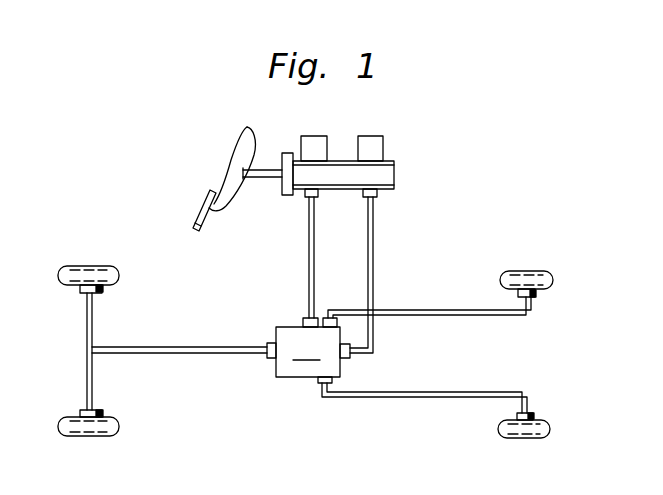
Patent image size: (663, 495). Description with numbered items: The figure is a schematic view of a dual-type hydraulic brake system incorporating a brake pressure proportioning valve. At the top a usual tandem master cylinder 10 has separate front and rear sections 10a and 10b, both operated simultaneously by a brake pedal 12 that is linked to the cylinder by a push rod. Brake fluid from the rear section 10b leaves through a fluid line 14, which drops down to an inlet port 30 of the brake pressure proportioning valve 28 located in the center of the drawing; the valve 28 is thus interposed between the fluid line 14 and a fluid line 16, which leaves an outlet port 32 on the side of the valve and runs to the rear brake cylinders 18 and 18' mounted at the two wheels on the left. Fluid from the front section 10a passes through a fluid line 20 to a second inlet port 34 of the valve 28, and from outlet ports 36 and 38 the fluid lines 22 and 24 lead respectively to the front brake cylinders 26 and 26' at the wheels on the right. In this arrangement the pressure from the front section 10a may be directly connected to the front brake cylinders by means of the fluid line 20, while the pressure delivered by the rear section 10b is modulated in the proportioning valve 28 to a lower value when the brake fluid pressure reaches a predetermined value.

The tandem master cylinder 10 is at (396, 163).
The front section 10a is at (376, 136).
The rear section 10b is at (314, 136).
The brake pedal 12 is at (232, 166).
The fluid line 14 is at (309, 256).
The fluid line 16 is at (238, 346).
The rear brake cylinder 18 is at (105, 290).
The rear brake cylinder 18' is at (107, 407).
The fluid line 20 is at (373, 236).
The fluid line 22 is at (425, 310).
The fluid line 24 is at (468, 392).
The front brake cylinder 26 is at (505, 290).
The front brake cylinder 26' is at (506, 423).
The brake pressure proportioning valve 28 is at (308, 352).
The inlet port 30 is at (304, 320).
The outlet port 32 is at (270, 360).
The inlet port 34 is at (352, 360).
The outlet port 36 is at (327, 318).
The outlet port 38 is at (318, 384).